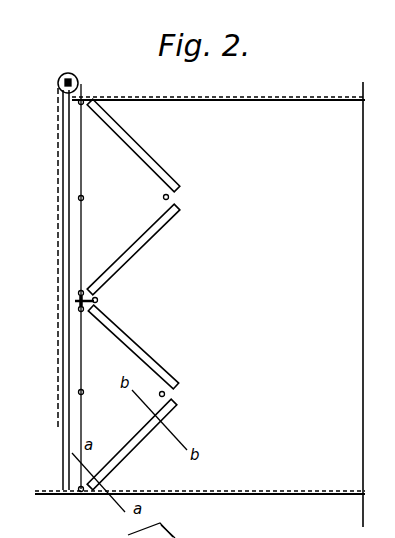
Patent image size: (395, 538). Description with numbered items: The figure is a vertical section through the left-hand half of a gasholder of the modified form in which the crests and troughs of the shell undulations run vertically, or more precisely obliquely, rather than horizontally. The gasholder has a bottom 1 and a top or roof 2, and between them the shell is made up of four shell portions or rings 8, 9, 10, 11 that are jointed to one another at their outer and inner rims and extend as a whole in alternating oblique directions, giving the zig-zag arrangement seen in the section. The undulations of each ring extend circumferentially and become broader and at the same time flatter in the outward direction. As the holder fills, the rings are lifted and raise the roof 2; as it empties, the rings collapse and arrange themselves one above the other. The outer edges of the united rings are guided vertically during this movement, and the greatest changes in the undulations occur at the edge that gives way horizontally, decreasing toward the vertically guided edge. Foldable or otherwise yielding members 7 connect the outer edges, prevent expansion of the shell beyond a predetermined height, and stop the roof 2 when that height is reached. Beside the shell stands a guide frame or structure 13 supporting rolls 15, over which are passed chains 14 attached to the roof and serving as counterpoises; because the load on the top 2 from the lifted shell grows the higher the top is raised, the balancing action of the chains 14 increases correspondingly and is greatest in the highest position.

The bottom 1 is at (289, 492).
The top or roof 2 is at (271, 104).
The foldable or yielding members 7 is at (85, 166).
The shell portion or ring 8 is at (133, 447).
The shell portion or ring 9 is at (153, 367).
The shell portion or ring 10 is at (163, 230).
The shell portion or ring 11 is at (145, 152).
The guide frame or structure 13 is at (62, 466).
The chains 14 is at (56, 234).
The rolls 15 is at (80, 80).